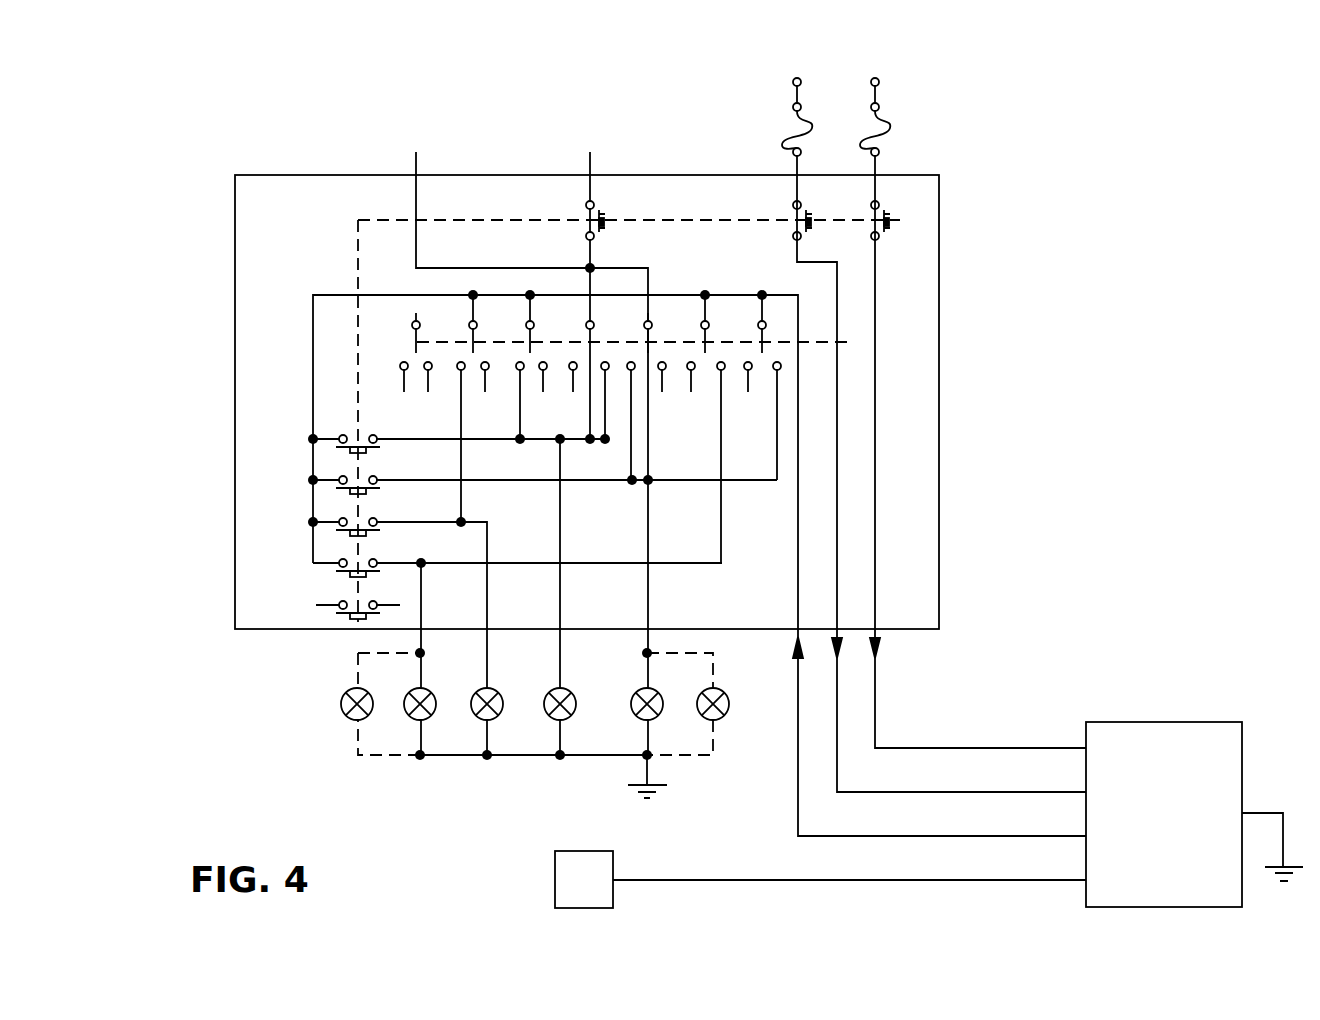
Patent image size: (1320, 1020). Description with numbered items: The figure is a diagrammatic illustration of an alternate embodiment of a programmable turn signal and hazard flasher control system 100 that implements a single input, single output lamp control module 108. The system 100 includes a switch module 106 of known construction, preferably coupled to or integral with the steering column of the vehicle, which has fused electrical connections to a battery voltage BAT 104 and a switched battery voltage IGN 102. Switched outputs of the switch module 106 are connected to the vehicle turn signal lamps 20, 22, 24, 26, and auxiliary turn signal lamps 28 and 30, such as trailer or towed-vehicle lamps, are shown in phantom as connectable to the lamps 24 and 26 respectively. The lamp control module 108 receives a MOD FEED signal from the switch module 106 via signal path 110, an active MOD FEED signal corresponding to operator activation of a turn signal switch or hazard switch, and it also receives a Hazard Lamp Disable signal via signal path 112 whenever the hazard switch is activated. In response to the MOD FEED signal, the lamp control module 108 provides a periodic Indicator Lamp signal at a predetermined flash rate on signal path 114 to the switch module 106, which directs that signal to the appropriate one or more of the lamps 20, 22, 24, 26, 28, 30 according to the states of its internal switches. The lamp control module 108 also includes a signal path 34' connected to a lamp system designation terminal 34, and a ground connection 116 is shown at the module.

The vehicle turn signal lamp 20 is at (478, 692).
The vehicle turn signal lamp 22 is at (551, 692).
The vehicle turn signal lamp 24 is at (437, 710).
The vehicle turn signal lamp 26 is at (638, 692).
The auxiliary turn signal lamp 28 is at (341, 702).
The auxiliary turn signal lamp 30 is at (729, 707).
The lamp system designation terminal 34 is at (497, 862).
The signal path 34' is at (849, 854).
The turn signal and hazard flasher control system 100 is at (1092, 268).
The switched battery voltage IGN 102 is at (882, 82).
The battery voltage BAT 104 is at (793, 82).
The switch module 106 is at (940, 275).
The lamp control module 108 is at (1165, 722).
The signal path 110 is at (878, 683).
The signal path 112 is at (836, 738).
The signal path 114 is at (798, 818).
The ground connection 116 is at (1270, 813).